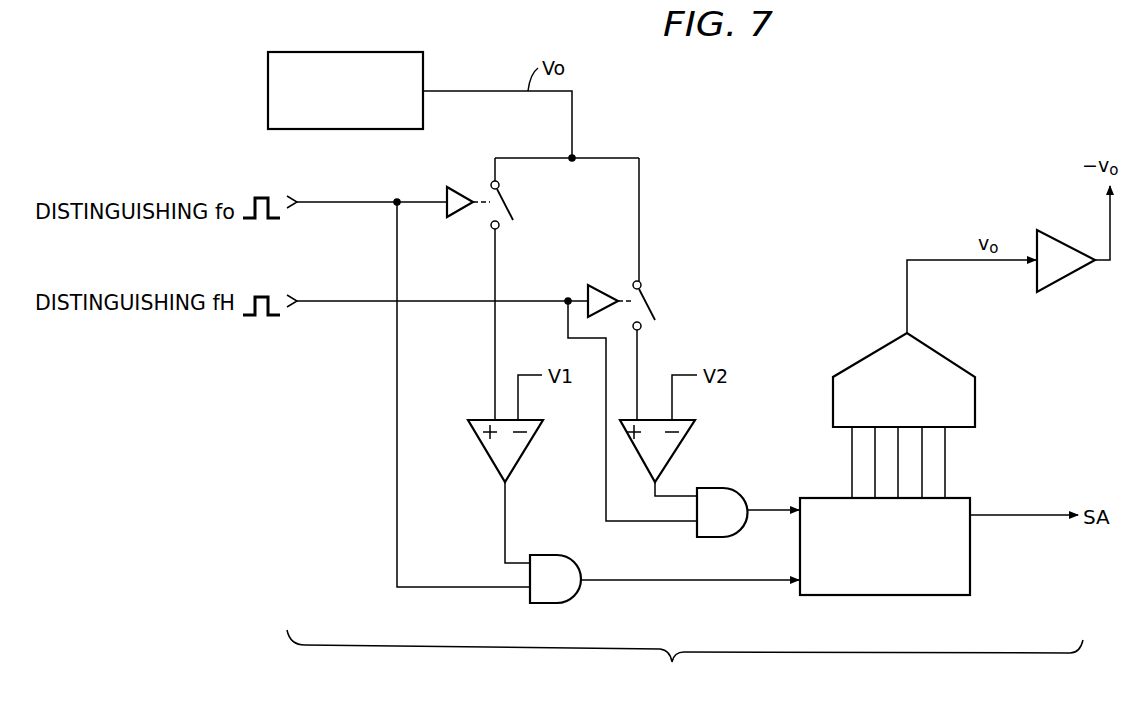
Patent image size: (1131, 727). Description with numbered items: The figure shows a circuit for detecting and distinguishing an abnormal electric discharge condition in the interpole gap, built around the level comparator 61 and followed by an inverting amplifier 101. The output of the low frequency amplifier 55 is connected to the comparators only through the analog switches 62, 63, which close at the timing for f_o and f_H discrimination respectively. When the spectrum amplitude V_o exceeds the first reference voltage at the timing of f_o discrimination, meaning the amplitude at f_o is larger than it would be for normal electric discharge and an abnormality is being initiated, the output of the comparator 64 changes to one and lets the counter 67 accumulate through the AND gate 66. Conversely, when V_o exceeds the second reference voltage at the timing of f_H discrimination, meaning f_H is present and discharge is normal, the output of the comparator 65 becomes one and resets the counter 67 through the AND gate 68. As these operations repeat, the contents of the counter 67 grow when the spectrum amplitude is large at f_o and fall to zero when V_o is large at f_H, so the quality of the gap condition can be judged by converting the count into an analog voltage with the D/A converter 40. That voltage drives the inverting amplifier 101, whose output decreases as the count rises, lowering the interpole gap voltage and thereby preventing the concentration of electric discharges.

The low frequency amplifier 55 is at (425, 58).
The analog switch 62 is at (513, 205).
The analog switch 63 is at (657, 305).
The comparator 64 is at (483, 448).
The comparator 65 is at (678, 458).
The AND gate 66 is at (572, 598).
The AND gate 68 is at (735, 532).
The counter 67 is at (870, 597).
The D/A converter 40 is at (977, 392).
The inverting amplifier 101 is at (1082, 273).
The level comparator 61 is at (685, 660).